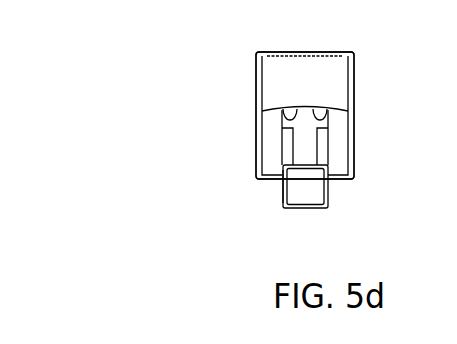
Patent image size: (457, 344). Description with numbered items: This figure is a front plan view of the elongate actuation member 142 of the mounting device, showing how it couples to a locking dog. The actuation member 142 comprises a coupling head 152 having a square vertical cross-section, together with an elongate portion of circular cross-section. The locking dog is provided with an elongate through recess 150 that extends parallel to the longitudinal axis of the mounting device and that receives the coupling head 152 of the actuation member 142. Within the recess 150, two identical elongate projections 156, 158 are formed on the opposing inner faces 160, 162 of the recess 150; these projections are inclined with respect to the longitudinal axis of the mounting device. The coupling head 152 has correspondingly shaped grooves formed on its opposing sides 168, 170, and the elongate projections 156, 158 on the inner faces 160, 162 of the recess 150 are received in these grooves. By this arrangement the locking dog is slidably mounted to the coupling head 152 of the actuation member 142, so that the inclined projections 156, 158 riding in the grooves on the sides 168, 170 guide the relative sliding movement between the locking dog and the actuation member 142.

The actuation member 142 is at (183, 72).
The through recess 150 is at (300, 140).
The coupling head 152 is at (328, 206).
The elongate projection 156 is at (322, 151).
The elongate projection 158 is at (287, 139).
The inner face 160 is at (320, 107).
The inner face 162 is at (297, 103).
The side of coupling head 168 is at (283, 194).
The side of coupling head 170 is at (313, 196).